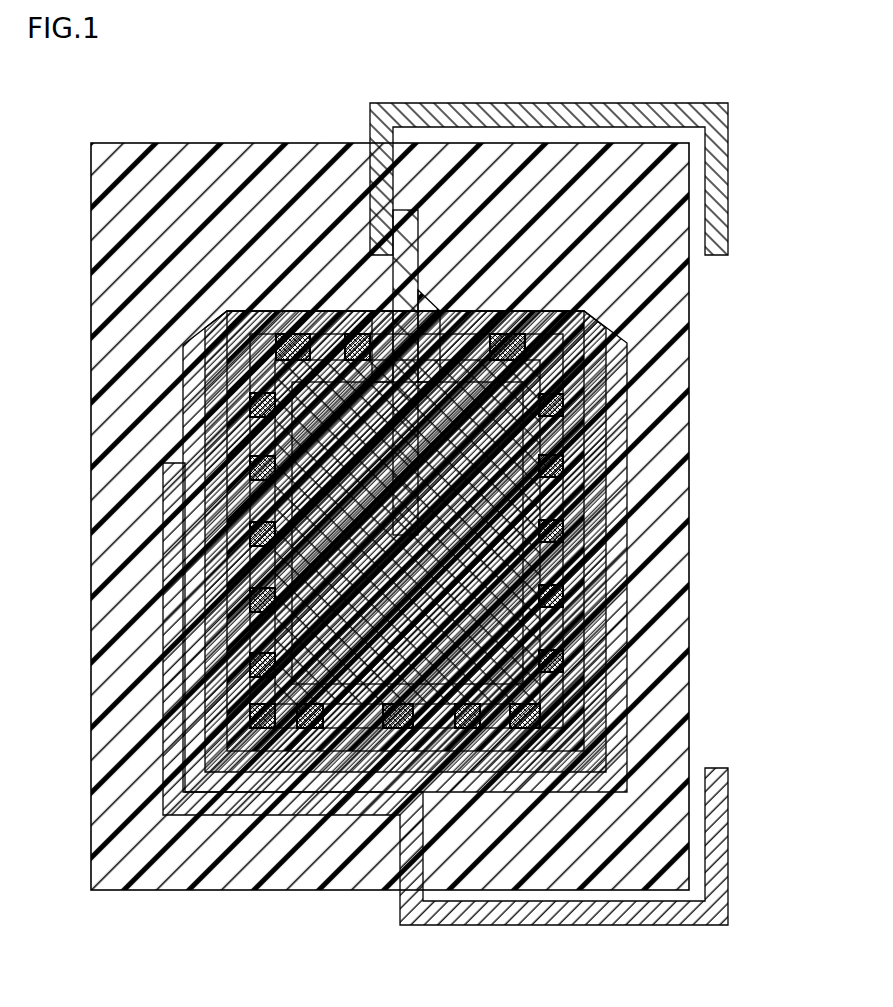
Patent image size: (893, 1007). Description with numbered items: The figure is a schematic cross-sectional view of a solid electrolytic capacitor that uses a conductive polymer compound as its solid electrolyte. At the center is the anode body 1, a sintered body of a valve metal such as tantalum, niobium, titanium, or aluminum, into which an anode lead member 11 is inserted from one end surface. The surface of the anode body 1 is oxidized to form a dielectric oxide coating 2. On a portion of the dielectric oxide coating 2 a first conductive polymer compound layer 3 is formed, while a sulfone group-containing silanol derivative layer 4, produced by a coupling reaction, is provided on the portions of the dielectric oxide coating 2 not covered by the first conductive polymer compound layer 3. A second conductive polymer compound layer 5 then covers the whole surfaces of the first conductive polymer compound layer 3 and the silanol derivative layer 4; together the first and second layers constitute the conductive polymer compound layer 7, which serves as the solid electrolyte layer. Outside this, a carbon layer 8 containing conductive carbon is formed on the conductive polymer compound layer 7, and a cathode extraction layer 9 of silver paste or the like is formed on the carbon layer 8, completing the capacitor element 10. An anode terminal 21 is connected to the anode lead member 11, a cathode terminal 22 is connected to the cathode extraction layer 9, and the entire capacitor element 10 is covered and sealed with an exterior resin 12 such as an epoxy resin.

The anode body 1 is at (492, 395).
The dielectric oxide coating 2 is at (533, 393).
The first conductive polymer compound layer 3 is at (552, 454).
The sulfone group-containing silanol derivative layer 4 is at (805, 725).
The second conductive polymer compound layer 5 is at (575, 547).
The conductive polymer compound layer 7 is at (512, 531).
The carbon layer 8 is at (612, 672).
The cathode extraction layer 9 is at (625, 708).
The capacitor element 10 is at (515, 551).
The anode lead member 11 is at (403, 278).
The exterior resin 12 is at (663, 820).
The anode terminal 21 is at (575, 103).
The cathode terminal 22 is at (612, 925).